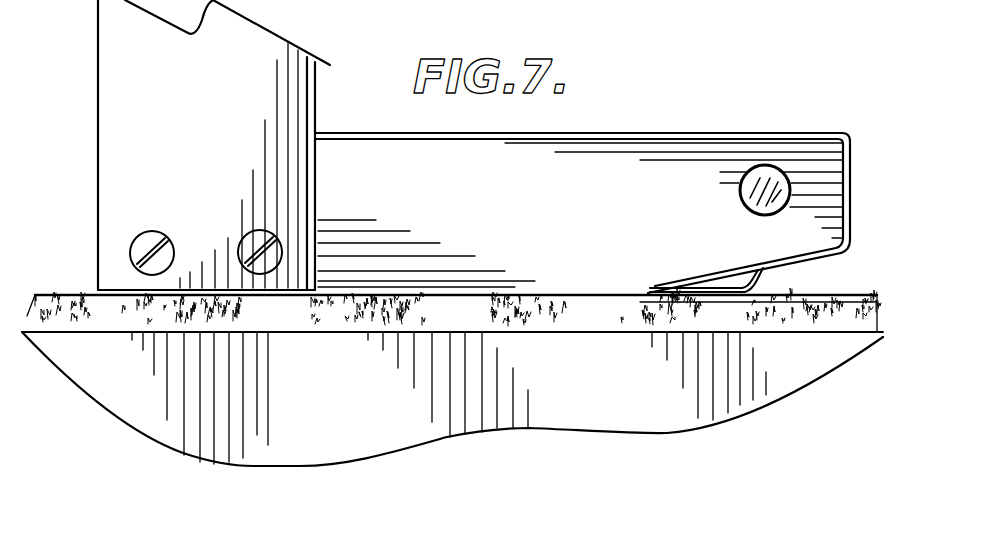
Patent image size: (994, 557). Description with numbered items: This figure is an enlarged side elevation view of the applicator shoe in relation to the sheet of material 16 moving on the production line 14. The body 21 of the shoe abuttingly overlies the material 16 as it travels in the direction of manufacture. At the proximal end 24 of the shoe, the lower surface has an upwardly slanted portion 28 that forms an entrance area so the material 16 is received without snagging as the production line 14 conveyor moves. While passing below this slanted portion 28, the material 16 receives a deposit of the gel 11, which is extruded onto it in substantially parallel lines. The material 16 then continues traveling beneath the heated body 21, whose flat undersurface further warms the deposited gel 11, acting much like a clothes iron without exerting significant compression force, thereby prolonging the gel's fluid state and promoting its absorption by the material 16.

The body 21 is at (588, 130).
The proximal end 24 is at (852, 193).
The slanted portion 28 is at (813, 258).
The gel 11 is at (770, 265).
The sheet of material 16 is at (500, 322).
The production line 14 is at (632, 435).